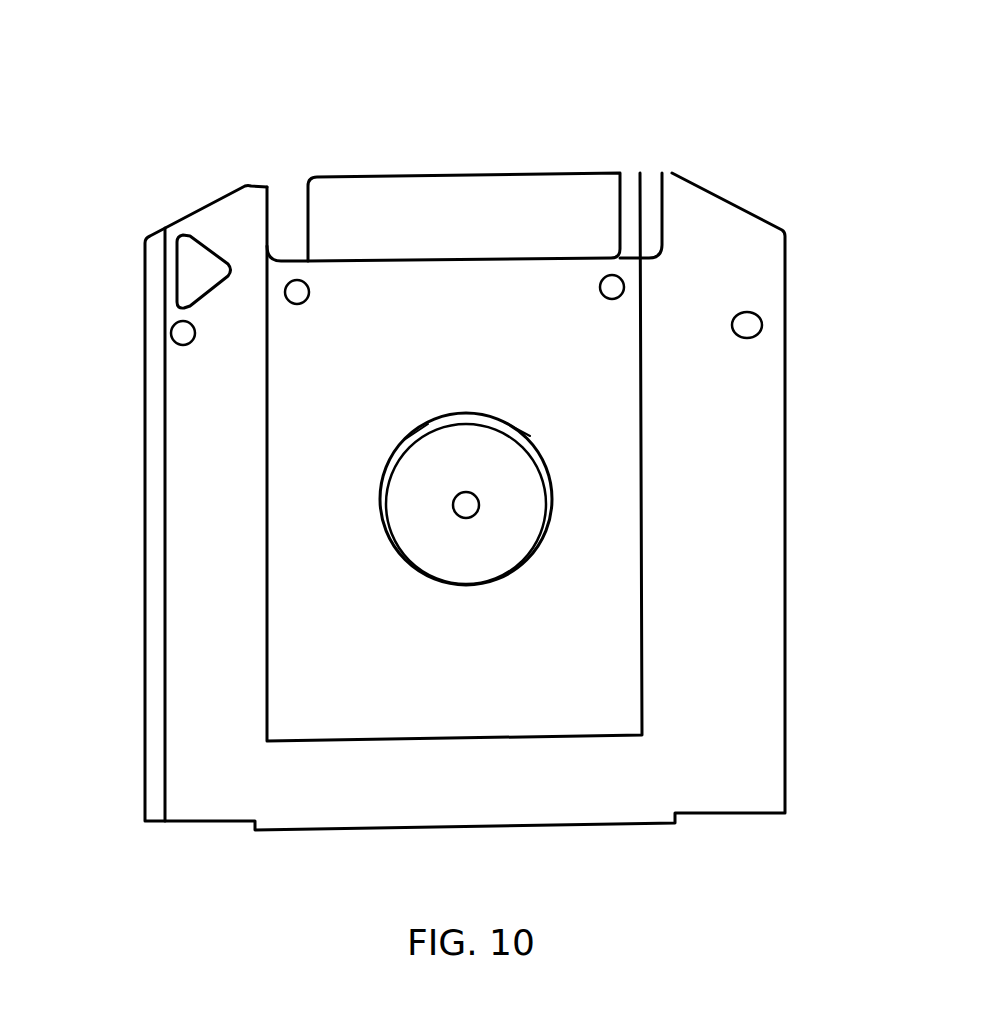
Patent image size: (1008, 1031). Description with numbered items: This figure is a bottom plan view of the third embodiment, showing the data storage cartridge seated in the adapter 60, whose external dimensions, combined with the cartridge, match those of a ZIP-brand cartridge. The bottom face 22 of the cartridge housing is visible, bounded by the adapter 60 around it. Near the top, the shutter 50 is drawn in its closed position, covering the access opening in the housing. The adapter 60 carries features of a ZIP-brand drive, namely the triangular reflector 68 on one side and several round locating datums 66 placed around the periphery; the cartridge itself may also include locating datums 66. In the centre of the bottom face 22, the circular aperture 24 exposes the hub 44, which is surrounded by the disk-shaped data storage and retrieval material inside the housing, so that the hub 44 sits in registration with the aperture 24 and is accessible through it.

The adapter 60 is at (402, 96).
The bottom face 22 is at (487, 658).
The shutter 50 is at (494, 208).
The locating datums 66 is at (293, 280).
The reflector 68 is at (193, 262).
The aperture 24 is at (555, 497).
The hub 44 is at (480, 470).